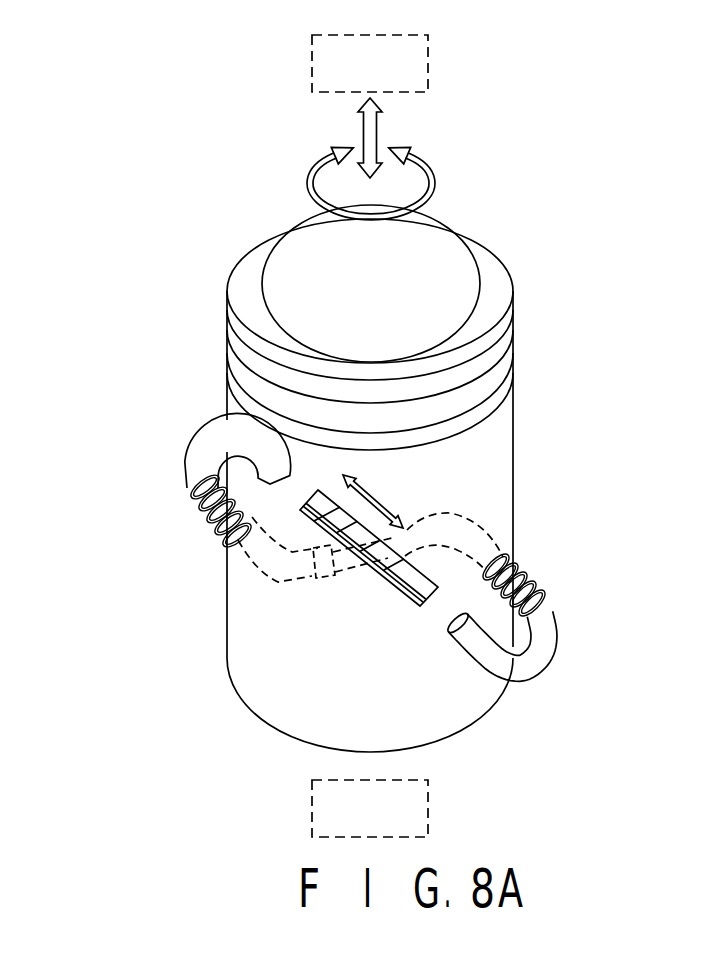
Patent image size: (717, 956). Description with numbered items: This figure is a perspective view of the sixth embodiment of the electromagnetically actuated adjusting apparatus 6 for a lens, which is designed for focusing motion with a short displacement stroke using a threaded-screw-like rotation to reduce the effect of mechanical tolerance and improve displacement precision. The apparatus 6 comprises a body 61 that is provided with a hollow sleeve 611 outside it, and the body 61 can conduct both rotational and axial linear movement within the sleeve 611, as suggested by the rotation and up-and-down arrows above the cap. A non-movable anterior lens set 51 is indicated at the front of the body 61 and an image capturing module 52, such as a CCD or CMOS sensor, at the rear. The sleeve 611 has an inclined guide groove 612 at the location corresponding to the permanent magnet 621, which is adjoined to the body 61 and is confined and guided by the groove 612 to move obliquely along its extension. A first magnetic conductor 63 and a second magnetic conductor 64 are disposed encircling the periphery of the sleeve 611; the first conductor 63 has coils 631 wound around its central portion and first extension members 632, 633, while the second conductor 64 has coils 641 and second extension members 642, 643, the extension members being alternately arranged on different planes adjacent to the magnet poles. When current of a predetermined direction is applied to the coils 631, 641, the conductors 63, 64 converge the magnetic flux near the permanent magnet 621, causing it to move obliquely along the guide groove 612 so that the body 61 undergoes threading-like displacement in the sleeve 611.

The electromagnetically actuated adjusting apparatus for lens 6 is at (180, 166).
The anterior lens set 51 is at (428, 72).
The image capturing module 52 is at (428, 818).
The body 61 is at (280, 394).
The hollow sleeve 611 is at (505, 431).
The inclined guide groove 612 is at (420, 593).
The permanent magnet 621 is at (395, 577).
The first magnetic conductor 63 is at (102, 623).
The coils 631 is at (235, 530).
The first extension member 632 is at (268, 459).
The first extension member 633 is at (280, 582).
The second magnetic conductor 64 is at (654, 488).
The coils 641 is at (537, 582).
The second extension member 642 is at (547, 637).
The second extension member 643 is at (485, 512).